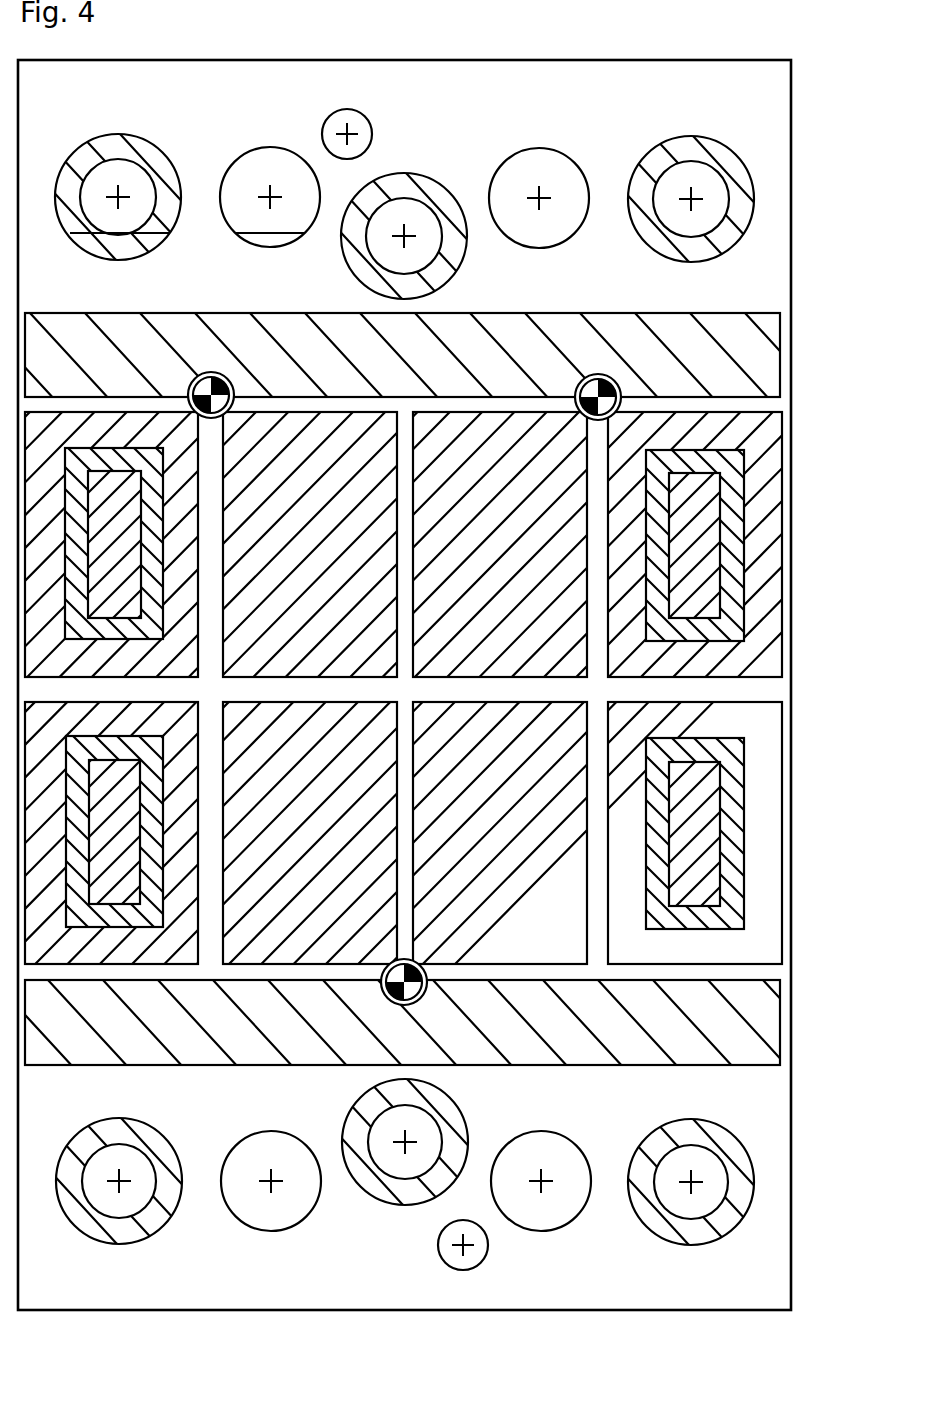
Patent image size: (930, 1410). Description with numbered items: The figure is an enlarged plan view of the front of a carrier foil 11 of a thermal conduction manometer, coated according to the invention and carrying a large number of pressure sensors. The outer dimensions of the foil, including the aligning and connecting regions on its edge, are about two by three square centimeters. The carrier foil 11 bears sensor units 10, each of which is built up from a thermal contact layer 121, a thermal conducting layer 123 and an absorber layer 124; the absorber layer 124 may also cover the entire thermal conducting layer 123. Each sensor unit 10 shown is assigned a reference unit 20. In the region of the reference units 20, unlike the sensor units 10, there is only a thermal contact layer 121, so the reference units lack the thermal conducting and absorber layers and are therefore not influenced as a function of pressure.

The sensor unit 10 is at (710, 444).
The carrier foil 11 is at (760, 407).
The reference unit 20 is at (500, 461).
The thermal contact layer 121 is at (465, 671).
The thermal conducting layer 123 is at (734, 573).
The absorber layer 124 is at (705, 521).